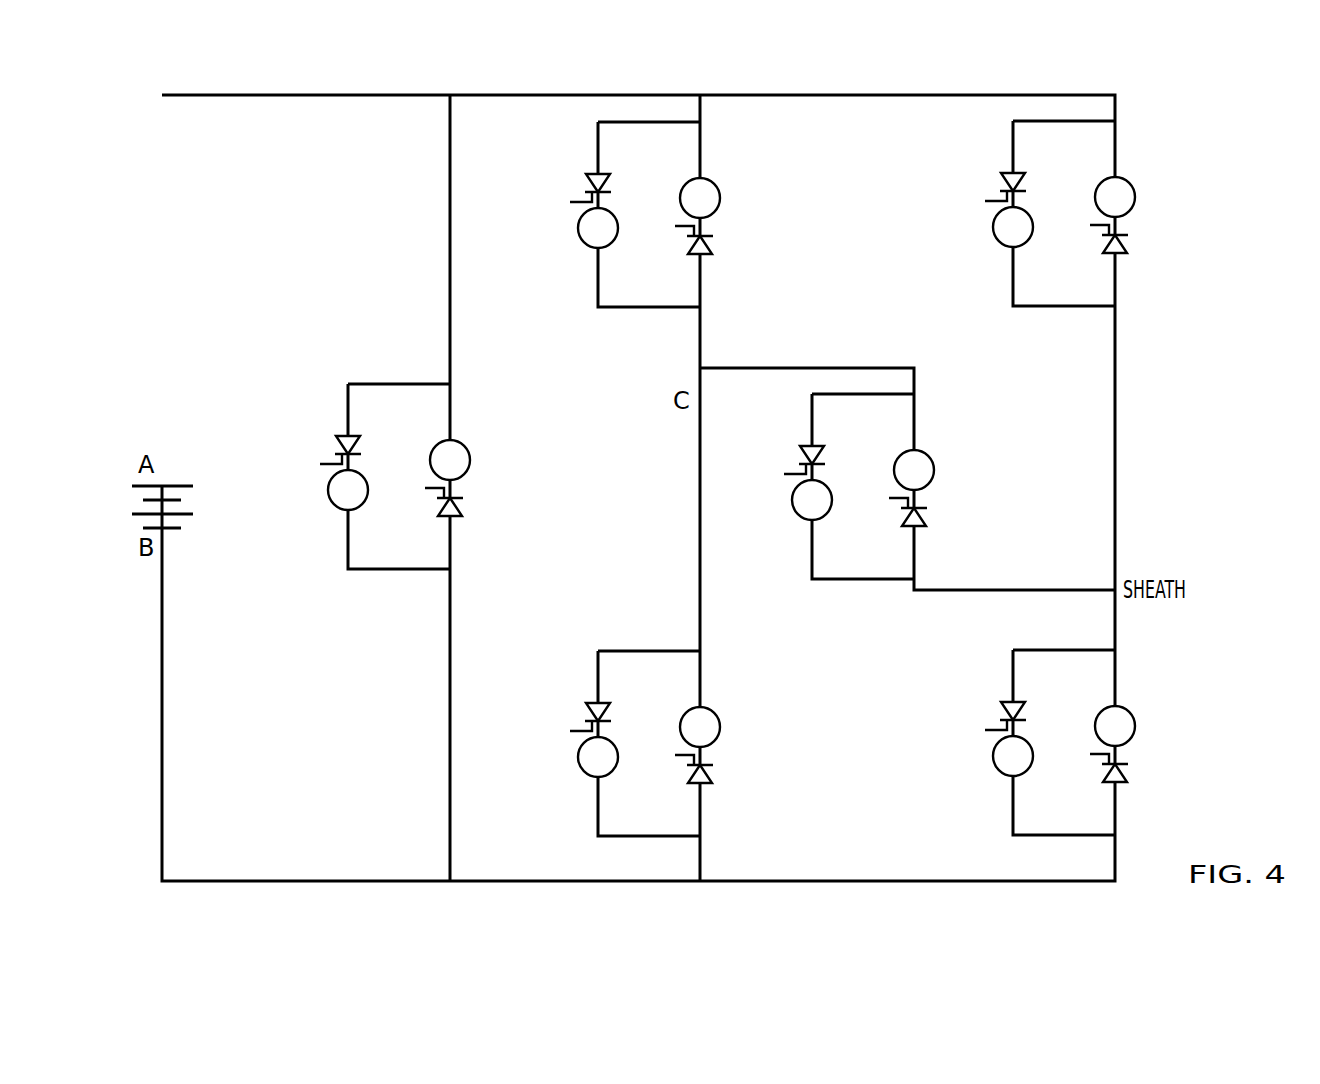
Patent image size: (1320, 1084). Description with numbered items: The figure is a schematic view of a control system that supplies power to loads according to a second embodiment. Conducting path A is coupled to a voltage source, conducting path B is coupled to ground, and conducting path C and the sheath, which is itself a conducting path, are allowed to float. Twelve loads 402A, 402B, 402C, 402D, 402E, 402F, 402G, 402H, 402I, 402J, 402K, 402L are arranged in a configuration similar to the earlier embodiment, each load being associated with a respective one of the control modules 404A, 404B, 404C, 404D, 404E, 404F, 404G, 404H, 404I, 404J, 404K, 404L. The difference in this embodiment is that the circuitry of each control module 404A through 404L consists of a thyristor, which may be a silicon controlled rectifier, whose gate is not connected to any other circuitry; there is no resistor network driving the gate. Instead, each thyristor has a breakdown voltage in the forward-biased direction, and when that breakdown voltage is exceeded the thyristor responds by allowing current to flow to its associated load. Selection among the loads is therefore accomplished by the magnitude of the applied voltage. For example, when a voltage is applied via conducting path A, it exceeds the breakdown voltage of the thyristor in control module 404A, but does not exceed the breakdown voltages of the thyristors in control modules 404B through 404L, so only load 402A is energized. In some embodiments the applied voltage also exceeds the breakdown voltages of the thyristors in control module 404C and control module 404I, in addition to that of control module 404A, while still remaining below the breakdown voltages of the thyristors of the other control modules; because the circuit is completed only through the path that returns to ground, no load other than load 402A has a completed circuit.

The load 402A is at (365, 467).
The load 402B is at (467, 435).
The load 402C is at (615, 205).
The load 402D is at (717, 173).
The load 402E is at (615, 734).
The load 402F is at (717, 702).
The load 402G is at (829, 477).
The load 402H is at (931, 445).
The load 402I is at (1028, 204).
The load 402J is at (1131, 172).
The load 402K is at (1031, 733).
The load 402L is at (1131, 701).
The control module 404A is at (299, 437).
The control module 404B is at (495, 516).
The control module 404C is at (549, 175).
The control module 404D is at (745, 254).
The control module 404E is at (549, 704).
The control module 404F is at (745, 783).
The control module 404G is at (763, 447).
The control module 404H is at (959, 526).
The control module 404I is at (965, 174).
The control module 404J is at (1159, 253).
The control module 404K is at (964, 703).
The control module 404L is at (1159, 782).